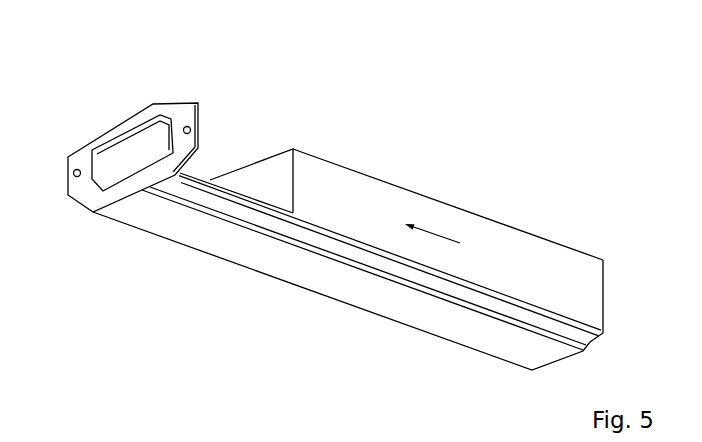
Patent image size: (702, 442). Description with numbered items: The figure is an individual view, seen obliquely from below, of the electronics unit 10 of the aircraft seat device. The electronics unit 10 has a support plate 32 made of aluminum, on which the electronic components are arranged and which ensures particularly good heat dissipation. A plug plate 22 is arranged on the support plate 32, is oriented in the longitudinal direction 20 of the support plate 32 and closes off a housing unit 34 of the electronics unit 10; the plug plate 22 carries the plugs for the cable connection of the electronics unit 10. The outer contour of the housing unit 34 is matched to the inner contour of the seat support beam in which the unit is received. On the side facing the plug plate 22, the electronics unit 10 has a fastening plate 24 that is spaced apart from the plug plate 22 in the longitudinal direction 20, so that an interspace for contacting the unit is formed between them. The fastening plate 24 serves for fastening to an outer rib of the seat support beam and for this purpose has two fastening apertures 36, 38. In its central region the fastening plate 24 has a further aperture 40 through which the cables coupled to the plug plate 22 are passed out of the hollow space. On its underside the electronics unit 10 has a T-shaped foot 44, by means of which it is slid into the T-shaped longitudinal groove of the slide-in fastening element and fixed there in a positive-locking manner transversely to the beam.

The electronics unit 10 is at (541, 233).
The longitudinal direction 20 is at (435, 231).
The plug plate 22 is at (271, 172).
The fastening plate 24 is at (173, 99).
The support plate 32 is at (250, 210).
The housing unit 34 is at (373, 176).
The fastening aperture 36 is at (68, 175).
The fastening aperture 38 is at (191, 130).
The aperture 40 is at (108, 173).
The T-shaped foot 44 is at (138, 212).